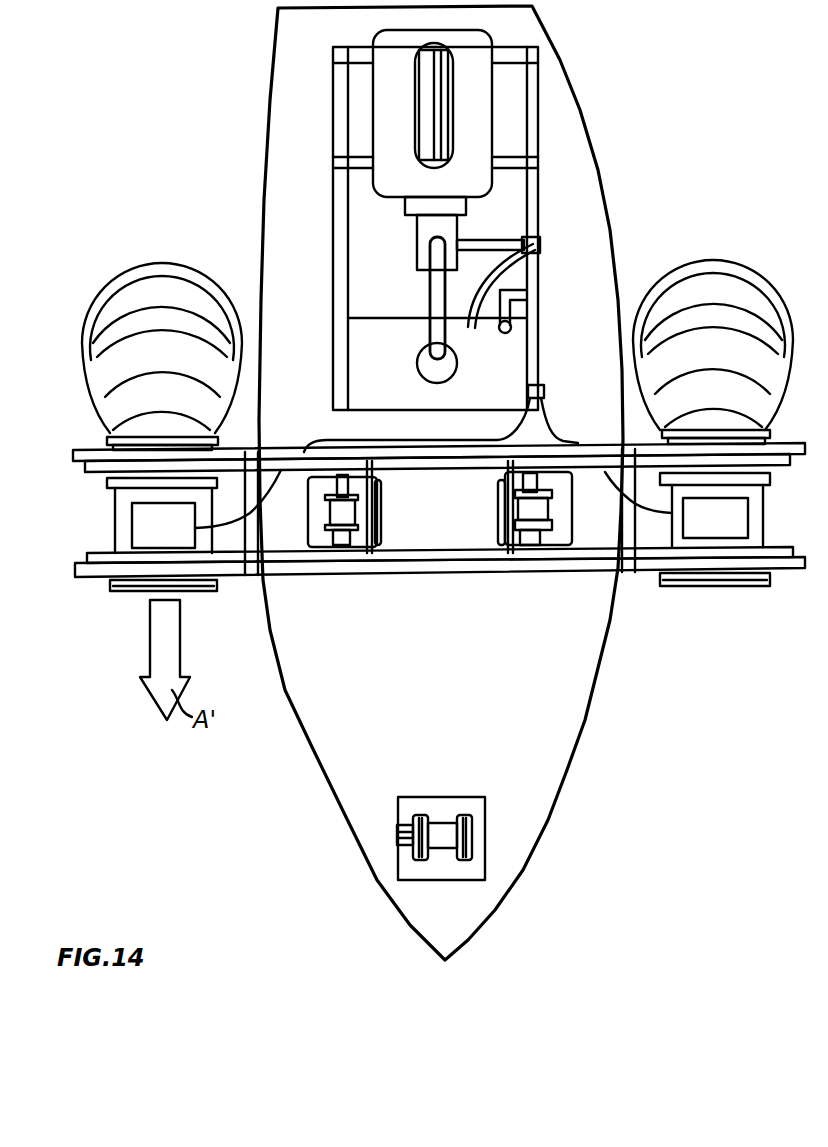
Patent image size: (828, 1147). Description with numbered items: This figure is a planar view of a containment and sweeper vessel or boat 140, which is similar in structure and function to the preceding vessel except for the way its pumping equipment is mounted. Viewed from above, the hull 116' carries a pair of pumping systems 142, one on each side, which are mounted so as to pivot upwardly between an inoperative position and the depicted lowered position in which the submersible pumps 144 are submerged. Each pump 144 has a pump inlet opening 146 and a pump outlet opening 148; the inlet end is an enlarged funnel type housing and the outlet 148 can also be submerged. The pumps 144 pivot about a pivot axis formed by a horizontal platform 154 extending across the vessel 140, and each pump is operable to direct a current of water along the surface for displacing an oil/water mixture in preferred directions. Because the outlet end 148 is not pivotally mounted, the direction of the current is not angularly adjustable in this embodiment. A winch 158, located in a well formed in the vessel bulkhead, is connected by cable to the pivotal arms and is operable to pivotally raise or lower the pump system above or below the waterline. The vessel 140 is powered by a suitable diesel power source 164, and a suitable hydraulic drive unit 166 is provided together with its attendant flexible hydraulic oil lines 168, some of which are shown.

The hull 116' is at (466, 483).
The containment and sweeper vessel 140 is at (583, 786).
The pumping system 142 is at (98, 424).
The submersible pump 144 is at (135, 527).
The pump inlet opening 146 is at (156, 258).
The pump outlet opening 148 is at (133, 593).
The horizontal platform 154 is at (575, 445).
The winch 158 is at (352, 545).
The diesel power source 164 is at (482, 95).
The hydraulic drive unit 166 is at (537, 190).
The flexible hydraulic oil lines 168 is at (596, 222).